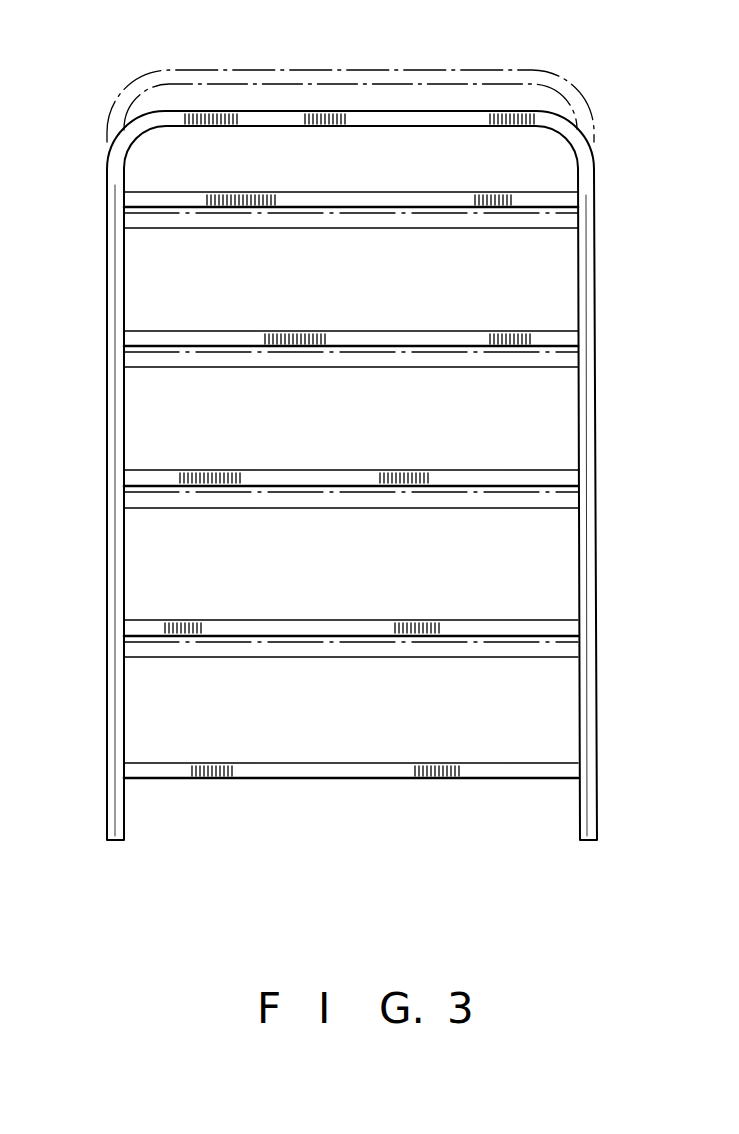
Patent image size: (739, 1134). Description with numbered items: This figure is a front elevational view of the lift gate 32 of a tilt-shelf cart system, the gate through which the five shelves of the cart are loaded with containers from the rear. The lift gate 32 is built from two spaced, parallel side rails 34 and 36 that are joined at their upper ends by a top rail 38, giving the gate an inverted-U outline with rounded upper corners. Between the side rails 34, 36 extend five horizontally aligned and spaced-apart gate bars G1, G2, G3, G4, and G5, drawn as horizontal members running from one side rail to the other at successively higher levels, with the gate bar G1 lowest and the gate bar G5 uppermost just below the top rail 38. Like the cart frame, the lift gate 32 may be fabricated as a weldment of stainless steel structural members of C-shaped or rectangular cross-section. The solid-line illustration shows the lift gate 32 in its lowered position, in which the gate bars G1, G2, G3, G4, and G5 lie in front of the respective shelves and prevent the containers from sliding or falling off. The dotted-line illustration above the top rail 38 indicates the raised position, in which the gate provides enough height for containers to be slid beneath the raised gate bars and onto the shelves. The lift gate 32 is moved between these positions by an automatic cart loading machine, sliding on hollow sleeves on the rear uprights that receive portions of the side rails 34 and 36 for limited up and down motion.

The lift gate 32 is at (518, 63).
The side rail 34 is at (110, 283).
The side rail 36 is at (595, 440).
The top rail 38 is at (354, 128).
The gate bar G1 is at (392, 762).
The gate bar G2 is at (400, 620).
The gate bar G3 is at (392, 471).
The gate bar G4 is at (396, 331).
The gate bar G5 is at (474, 192).